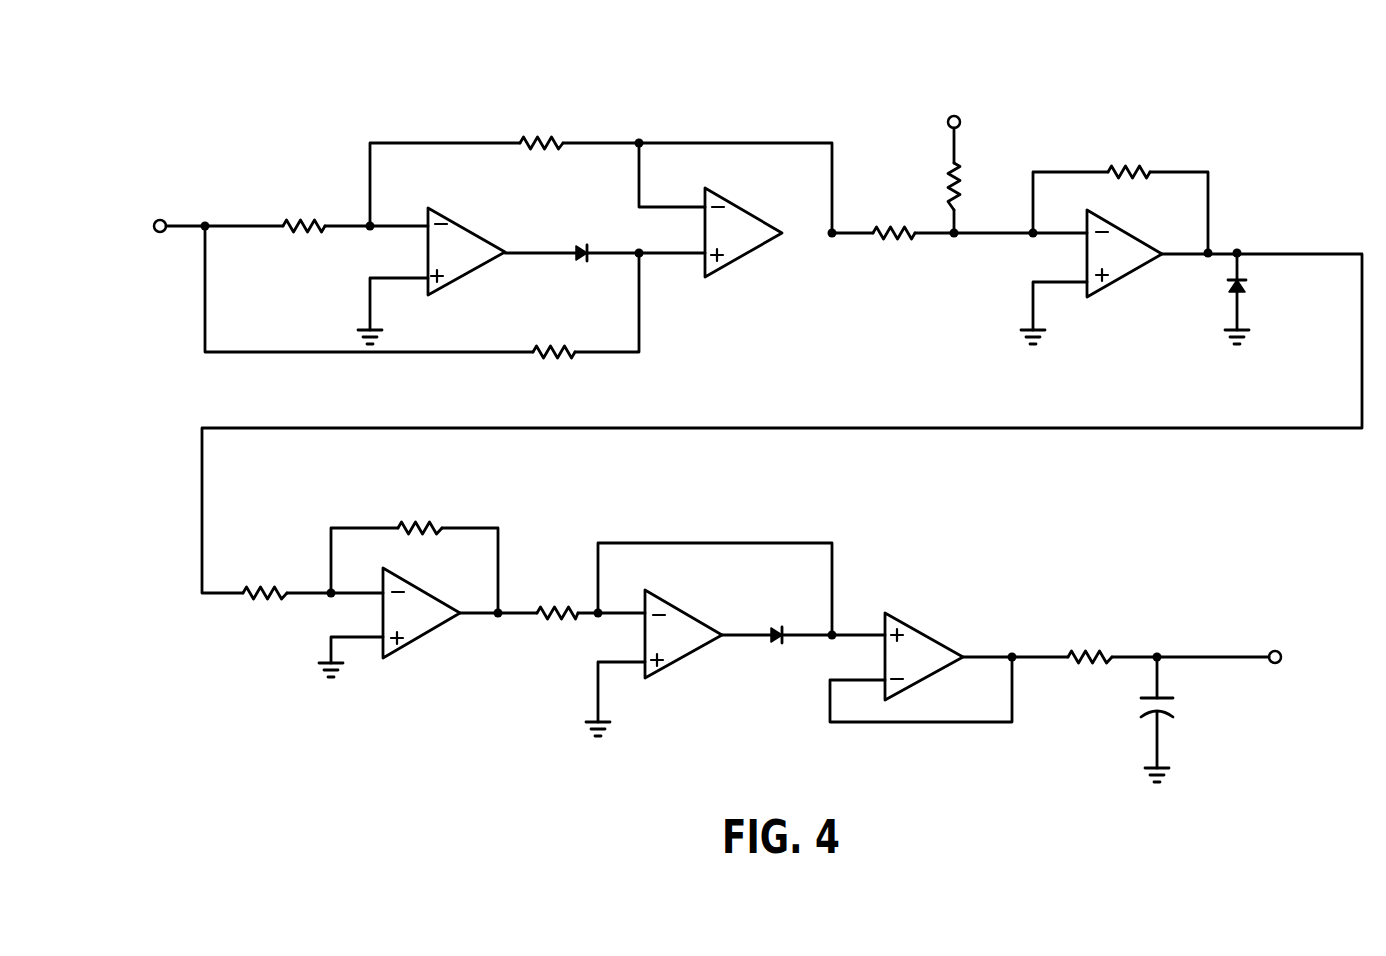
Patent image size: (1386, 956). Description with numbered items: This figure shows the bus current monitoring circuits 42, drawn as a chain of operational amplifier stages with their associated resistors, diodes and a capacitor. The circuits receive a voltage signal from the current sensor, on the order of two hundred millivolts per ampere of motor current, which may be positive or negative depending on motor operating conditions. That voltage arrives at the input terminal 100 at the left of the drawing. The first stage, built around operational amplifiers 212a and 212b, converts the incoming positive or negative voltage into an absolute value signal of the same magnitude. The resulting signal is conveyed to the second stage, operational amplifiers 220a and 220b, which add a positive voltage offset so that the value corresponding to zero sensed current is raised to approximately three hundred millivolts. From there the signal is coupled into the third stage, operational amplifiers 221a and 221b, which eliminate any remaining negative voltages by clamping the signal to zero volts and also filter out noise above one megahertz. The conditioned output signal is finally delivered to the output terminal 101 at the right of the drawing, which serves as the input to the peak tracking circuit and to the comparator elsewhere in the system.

The current monitoring circuits 42 is at (1116, 118).
The terminal 100 is at (163, 220).
The terminal 101 is at (1275, 651).
The operational amplifier 212a is at (466, 251).
The operational amplifier 212b is at (743, 232).
The operational amplifier 220a is at (1124, 253).
The operational amplifier 220b is at (421, 613).
The operational amplifier 221a is at (683, 634).
The operational amplifier 221b is at (924, 656).